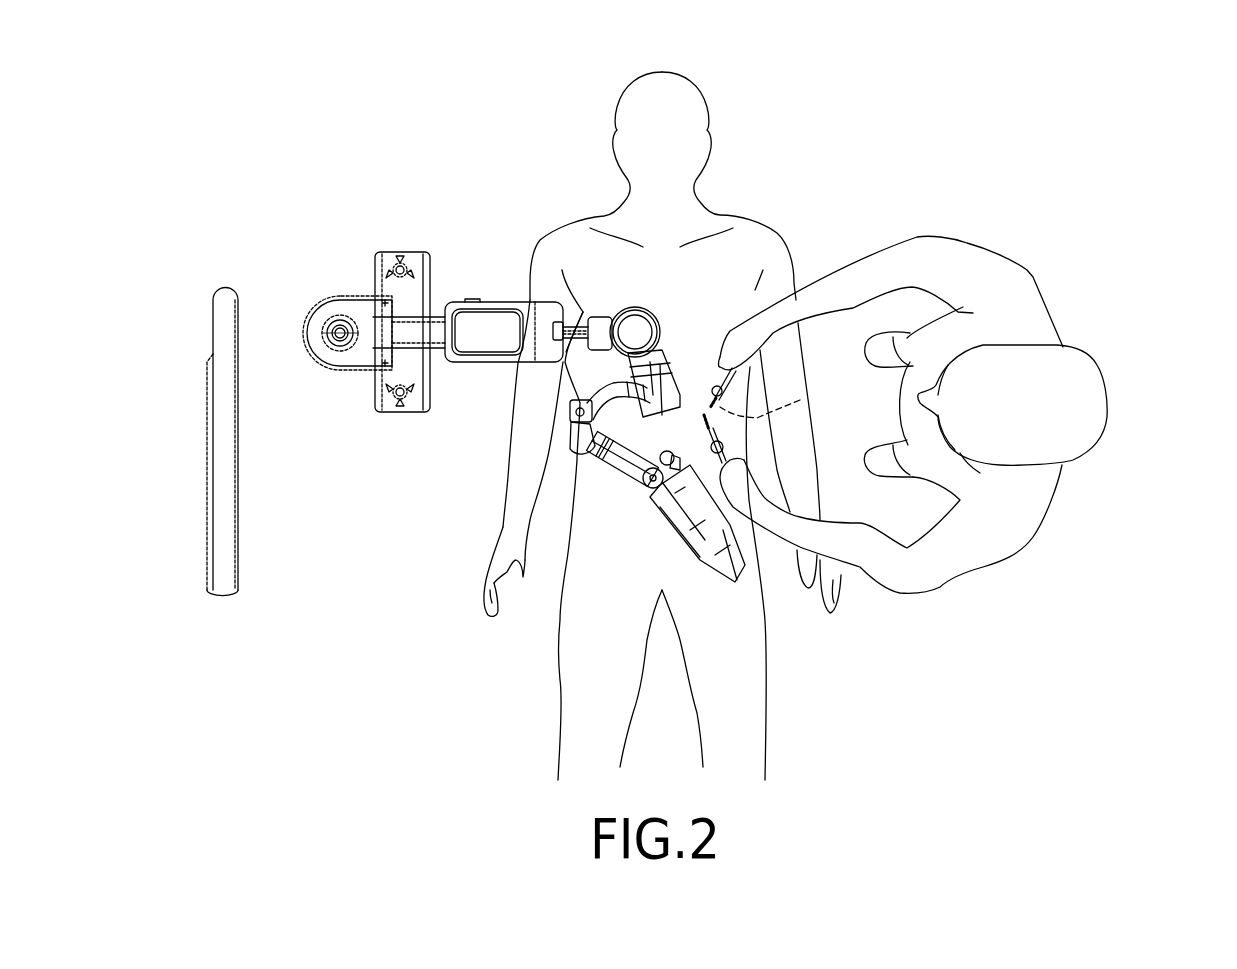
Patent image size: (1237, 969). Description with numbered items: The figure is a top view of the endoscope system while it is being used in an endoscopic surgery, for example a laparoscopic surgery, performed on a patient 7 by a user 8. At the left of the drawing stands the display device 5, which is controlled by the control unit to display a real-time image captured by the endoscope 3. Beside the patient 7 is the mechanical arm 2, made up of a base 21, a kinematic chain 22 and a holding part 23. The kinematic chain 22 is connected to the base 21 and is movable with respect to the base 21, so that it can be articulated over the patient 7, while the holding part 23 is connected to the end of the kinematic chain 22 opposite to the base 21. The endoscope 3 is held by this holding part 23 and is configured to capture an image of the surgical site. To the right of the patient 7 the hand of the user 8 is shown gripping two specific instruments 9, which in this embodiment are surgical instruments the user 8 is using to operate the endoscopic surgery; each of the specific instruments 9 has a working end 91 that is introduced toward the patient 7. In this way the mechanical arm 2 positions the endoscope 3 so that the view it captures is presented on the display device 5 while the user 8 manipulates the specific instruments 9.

The mechanical arm 2 is at (385, 424).
The endoscope 3 is at (689, 466).
The display device 5 is at (211, 297).
The patient 7 is at (741, 113).
The user 8 is at (1120, 377).
The specific instruments 9 is at (730, 390).
The working end 91 is at (800, 400).
The base 21 is at (418, 405).
The kinematic chain 22 is at (604, 404).
The holding part 23 is at (677, 463).